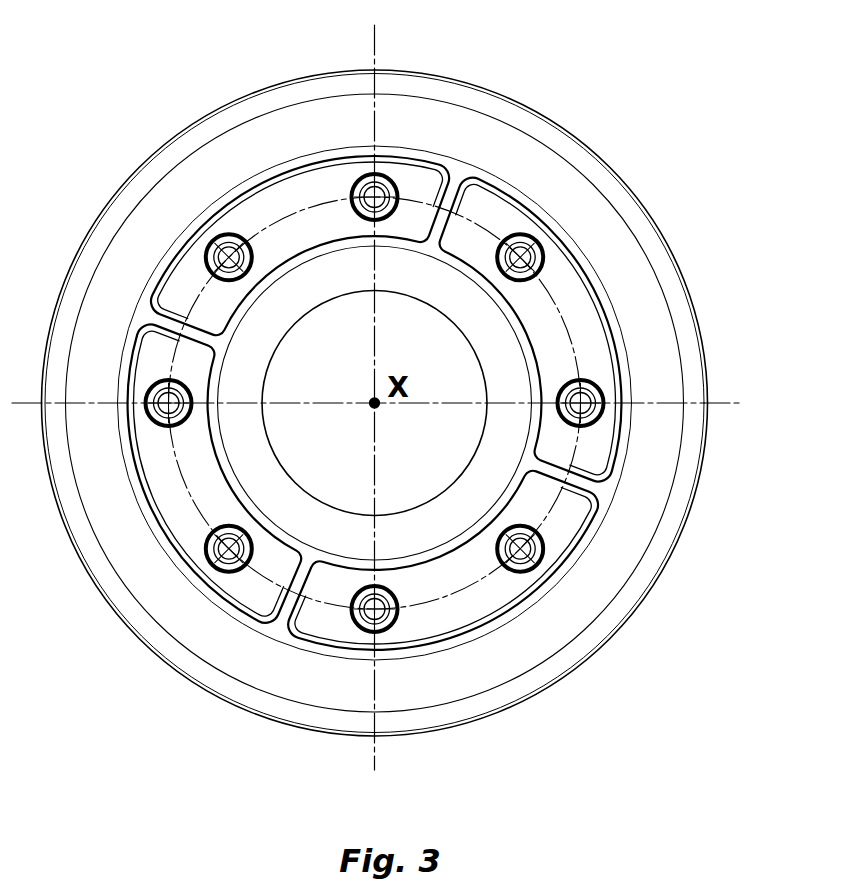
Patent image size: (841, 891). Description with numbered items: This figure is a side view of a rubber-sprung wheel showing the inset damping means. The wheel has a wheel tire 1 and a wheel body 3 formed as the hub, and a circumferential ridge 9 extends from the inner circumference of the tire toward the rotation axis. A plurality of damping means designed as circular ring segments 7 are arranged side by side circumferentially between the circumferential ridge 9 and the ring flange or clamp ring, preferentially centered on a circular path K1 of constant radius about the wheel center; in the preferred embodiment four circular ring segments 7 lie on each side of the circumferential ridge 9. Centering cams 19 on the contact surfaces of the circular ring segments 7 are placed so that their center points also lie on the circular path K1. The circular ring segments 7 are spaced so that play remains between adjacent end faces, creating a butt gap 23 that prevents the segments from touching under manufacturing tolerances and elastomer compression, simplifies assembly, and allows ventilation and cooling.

The wheel tire 1 is at (320, 132).
The wheel body 3 is at (483, 483).
The circular ring segments 7 is at (243, 220).
The circumferential ridge 9 is at (287, 627).
The centering cams 19 is at (537, 232).
The butt gap 23 is at (160, 313).
The circular path K1 is at (563, 320).